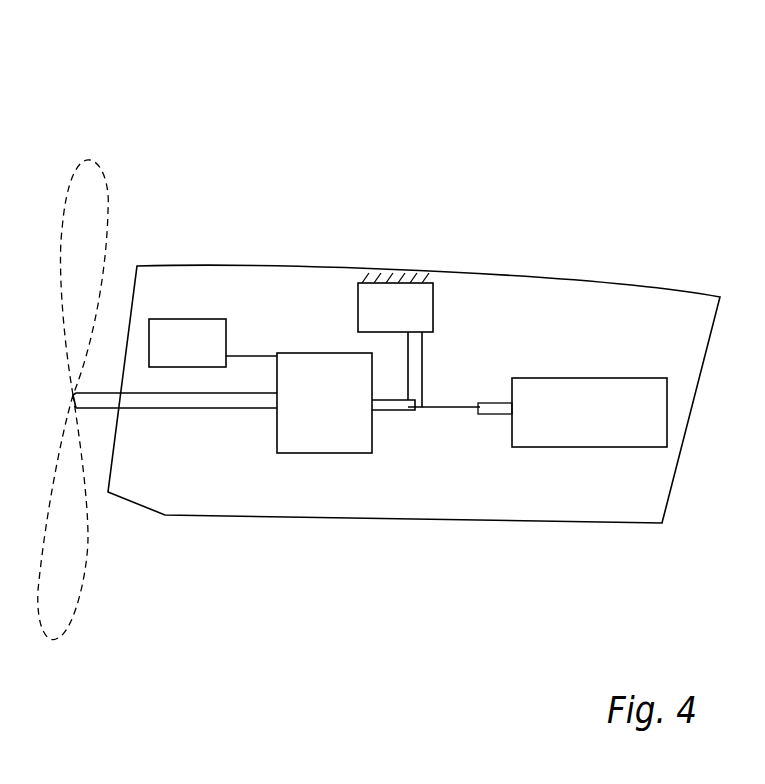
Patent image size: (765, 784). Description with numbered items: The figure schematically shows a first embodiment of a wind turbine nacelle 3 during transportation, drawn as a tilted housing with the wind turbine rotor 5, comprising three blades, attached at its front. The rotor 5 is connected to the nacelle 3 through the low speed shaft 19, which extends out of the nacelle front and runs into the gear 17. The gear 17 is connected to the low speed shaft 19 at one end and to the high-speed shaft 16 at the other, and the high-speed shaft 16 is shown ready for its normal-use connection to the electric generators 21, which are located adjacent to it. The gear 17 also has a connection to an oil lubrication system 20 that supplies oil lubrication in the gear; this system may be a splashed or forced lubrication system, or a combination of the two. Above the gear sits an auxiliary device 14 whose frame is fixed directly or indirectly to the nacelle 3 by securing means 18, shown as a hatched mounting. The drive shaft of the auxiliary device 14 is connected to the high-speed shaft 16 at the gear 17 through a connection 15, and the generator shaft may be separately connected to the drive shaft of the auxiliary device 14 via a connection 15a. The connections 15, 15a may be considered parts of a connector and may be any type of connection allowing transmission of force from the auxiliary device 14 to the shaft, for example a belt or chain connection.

The wind turbine nacelle 3 is at (548, 126).
The wind turbine rotor 5 is at (108, 203).
The auxiliary device 14 is at (362, 309).
The connection 15 is at (408, 353).
The connection 15a is at (422, 362).
The high-speed shaft 16 is at (403, 411).
The gear 17 is at (280, 455).
The securing means 18 is at (397, 268).
The low speed shaft 19 is at (203, 408).
The oil lubrication system 20 is at (183, 319).
The electric generators 21 is at (550, 447).